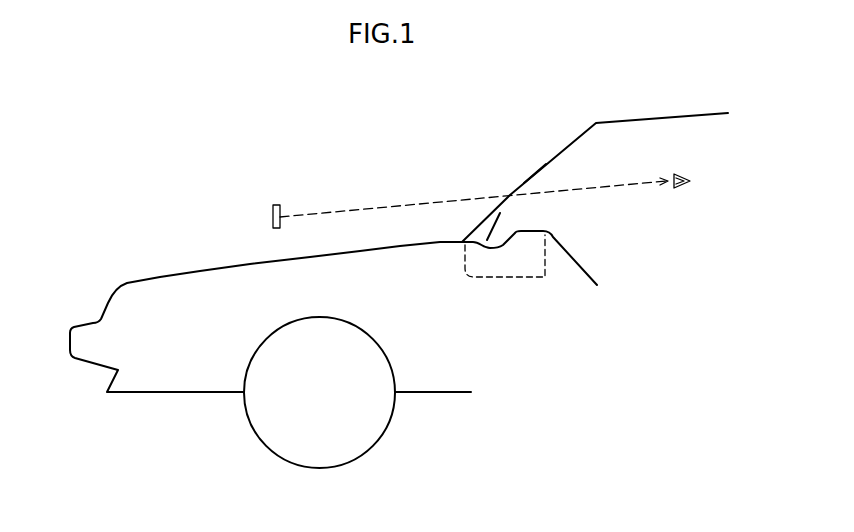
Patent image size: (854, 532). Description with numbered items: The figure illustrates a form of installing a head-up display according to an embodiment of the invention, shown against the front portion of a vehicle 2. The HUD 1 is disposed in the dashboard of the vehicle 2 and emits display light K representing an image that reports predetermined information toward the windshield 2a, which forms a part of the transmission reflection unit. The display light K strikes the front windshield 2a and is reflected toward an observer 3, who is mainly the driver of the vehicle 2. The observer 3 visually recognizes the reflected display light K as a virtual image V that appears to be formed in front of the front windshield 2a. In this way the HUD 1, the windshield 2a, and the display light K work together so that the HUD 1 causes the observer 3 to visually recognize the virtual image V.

The HUD 1 is at (515, 277).
The vehicle 2 is at (648, 116).
The windshield 2a is at (535, 173).
The observer 3 is at (689, 178).
The virtual image V is at (279, 203).
The display light K is at (500, 213).